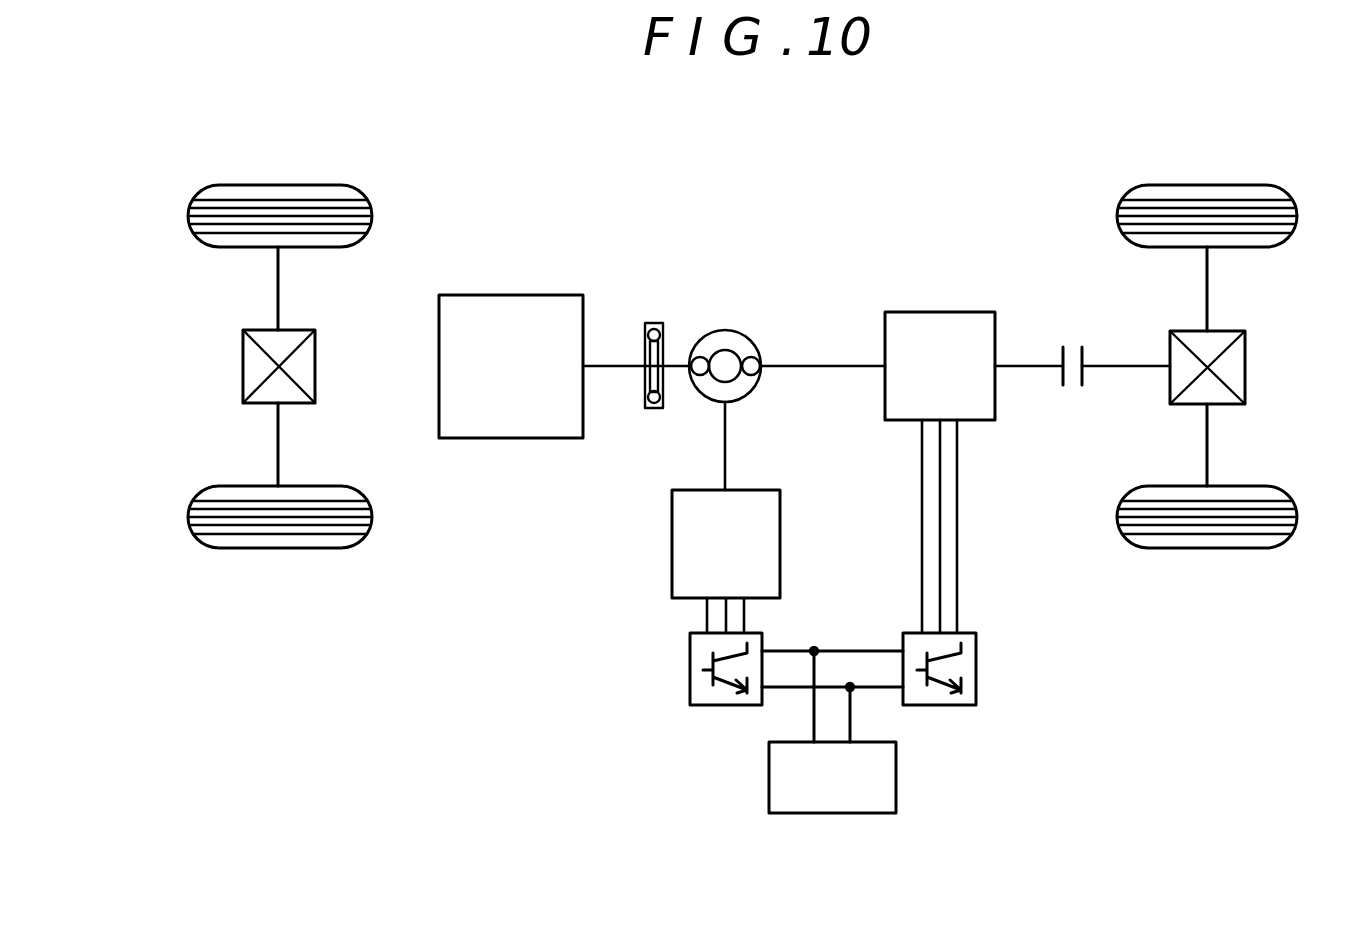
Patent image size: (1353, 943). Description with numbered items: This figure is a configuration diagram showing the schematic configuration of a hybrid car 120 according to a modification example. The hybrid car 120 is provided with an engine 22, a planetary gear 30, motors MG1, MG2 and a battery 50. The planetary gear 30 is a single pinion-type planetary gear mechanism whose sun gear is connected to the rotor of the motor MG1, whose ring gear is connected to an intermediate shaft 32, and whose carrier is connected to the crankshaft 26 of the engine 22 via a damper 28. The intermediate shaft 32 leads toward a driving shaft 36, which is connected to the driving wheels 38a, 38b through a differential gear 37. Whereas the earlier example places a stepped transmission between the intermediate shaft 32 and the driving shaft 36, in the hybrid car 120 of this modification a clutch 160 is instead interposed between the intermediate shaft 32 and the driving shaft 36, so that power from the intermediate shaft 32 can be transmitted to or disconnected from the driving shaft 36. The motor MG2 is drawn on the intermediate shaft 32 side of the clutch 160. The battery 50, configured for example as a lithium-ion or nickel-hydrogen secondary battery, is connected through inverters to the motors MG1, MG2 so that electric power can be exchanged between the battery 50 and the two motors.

The hybrid car 120 is at (1002, 168).
The engine 22 is at (547, 293).
The crankshaft 26 is at (602, 362).
The damper 28 is at (655, 322).
The planetary gear 30 is at (727, 328).
The motor MG1 is at (762, 488).
The motor MG2 is at (958, 311).
The intermediate shaft 32 is at (1012, 362).
The clutch 160 is at (1073, 345).
The driving shaft 36 is at (1137, 362).
The differential gear 37 is at (1223, 328).
The drive wheel 38a is at (1207, 184).
The drive wheel 38b is at (1207, 550).
The battery 50 is at (897, 777).